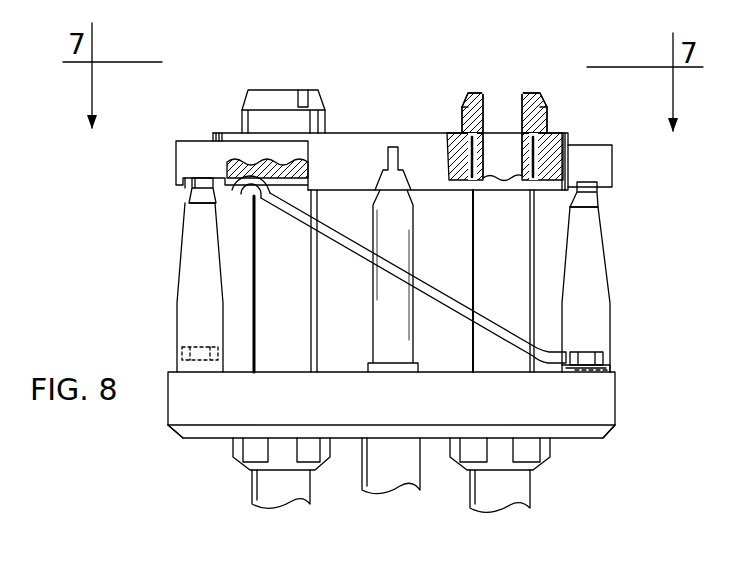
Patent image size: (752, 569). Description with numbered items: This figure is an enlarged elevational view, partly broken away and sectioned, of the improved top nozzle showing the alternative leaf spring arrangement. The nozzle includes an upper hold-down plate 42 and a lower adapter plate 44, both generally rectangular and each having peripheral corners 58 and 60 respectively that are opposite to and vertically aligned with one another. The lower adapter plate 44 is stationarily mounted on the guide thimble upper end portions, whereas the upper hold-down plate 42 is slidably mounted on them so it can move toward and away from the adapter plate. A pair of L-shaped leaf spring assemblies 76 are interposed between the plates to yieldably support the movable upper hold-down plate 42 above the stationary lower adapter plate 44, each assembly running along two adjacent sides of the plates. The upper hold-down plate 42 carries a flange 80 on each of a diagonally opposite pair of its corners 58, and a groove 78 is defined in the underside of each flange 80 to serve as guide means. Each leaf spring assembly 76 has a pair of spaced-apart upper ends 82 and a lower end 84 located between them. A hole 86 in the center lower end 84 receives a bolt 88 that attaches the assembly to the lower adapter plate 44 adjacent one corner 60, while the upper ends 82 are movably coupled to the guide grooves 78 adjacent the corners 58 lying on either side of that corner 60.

The upper hold-down plate 42 is at (445, 130).
The lower adapter plate 44 is at (620, 404).
The corners of upper hold-down plate 58 is at (191, 140).
The corners of lower adapter plate 60 is at (168, 408).
The leaf spring assembly 76 is at (183, 266).
The groove 78 is at (190, 186).
The flange 80 is at (176, 160).
The upper ends 82 is at (240, 192).
The lower end 84 is at (613, 366).
The hole 86 is at (603, 372).
The bolt 88 is at (195, 345).